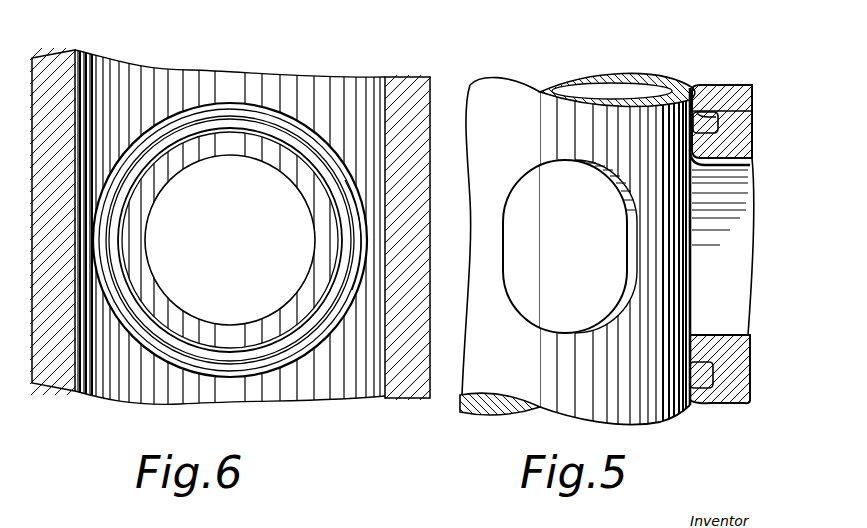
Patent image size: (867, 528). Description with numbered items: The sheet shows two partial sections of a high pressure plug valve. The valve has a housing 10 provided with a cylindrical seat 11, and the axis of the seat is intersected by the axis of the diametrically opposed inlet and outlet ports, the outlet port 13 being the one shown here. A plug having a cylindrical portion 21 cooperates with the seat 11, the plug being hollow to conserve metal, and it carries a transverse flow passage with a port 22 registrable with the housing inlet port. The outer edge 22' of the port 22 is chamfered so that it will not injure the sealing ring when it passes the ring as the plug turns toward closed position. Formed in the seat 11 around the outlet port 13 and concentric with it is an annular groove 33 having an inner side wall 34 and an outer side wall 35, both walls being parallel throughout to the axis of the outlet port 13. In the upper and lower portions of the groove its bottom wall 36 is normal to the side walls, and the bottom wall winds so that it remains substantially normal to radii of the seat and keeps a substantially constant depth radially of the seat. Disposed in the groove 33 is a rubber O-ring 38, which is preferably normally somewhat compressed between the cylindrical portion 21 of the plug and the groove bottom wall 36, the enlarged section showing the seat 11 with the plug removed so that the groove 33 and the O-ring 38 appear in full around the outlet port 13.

In FIG. 6, the housing 10 is at (400, 76).
In FIG. 6, the cylindrical seat 11 is at (326, 87).
In FIG. 5, the cylindrical seat 11 is at (668, 310).
In FIG. 6, the outlet port 13 is at (286, 192).
In FIG. 5, the outlet port 13 is at (740, 203).
In FIG. 5, the cylindrical portion 21 is at (648, 80).
In FIG. 5, the port 22 is at (562, 257).
In FIG. 5, the outer edge 22' is at (686, 262).
In FIG. 6, the annular groove 33 is at (264, 107).
In FIG. 5, the annular groove 33 is at (704, 110).
In FIG. 5, the inner side wall 34 is at (717, 332).
In FIG. 5, the outer side wall 35 is at (706, 392).
In FIG. 5, the bottom wall 36 is at (740, 84).
In FIG. 6, the rubber O-ring 38 is at (206, 352).
In FIG. 5, the rubber O-ring 38 is at (720, 122).